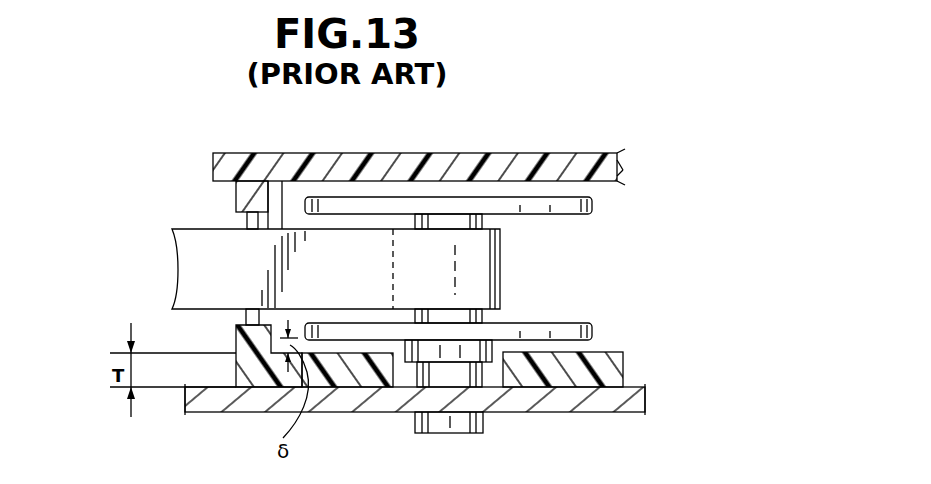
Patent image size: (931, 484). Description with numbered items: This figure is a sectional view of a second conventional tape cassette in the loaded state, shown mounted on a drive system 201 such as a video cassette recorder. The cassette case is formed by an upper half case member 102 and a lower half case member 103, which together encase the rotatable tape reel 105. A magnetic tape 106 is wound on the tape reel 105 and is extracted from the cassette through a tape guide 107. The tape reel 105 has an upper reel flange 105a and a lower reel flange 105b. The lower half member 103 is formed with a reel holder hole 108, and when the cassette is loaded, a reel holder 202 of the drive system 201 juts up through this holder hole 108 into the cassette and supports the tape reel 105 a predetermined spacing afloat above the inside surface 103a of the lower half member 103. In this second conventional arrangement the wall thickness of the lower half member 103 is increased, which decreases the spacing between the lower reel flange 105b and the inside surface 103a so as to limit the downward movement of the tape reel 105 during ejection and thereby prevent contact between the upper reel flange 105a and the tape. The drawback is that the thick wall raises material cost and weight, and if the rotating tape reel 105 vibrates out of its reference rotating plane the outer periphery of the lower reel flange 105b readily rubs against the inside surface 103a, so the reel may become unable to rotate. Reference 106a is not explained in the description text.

The upper half case member 102 is at (225, 165).
The lower half case member 103 is at (260, 373).
The inside surface of lower half member 103a is at (368, 353).
The tape reel 105 is at (480, 186).
The upper reel flange 105a is at (345, 205).
The lower reel flange 105b is at (360, 332).
The magnetic tape 106 is at (166, 253).
The shaft support bracket 106a is at (281, 229).
The tape guide 107 is at (246, 217).
The reel holder hole 108 is at (400, 370).
The drive system 201 is at (180, 405).
The reel holder 202 is at (452, 427).